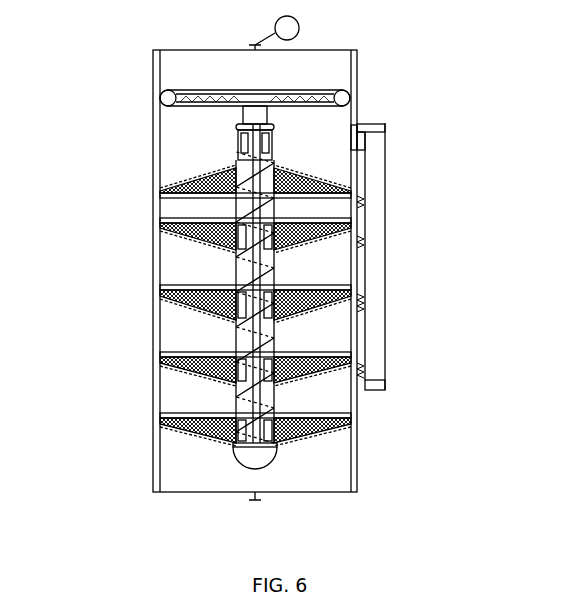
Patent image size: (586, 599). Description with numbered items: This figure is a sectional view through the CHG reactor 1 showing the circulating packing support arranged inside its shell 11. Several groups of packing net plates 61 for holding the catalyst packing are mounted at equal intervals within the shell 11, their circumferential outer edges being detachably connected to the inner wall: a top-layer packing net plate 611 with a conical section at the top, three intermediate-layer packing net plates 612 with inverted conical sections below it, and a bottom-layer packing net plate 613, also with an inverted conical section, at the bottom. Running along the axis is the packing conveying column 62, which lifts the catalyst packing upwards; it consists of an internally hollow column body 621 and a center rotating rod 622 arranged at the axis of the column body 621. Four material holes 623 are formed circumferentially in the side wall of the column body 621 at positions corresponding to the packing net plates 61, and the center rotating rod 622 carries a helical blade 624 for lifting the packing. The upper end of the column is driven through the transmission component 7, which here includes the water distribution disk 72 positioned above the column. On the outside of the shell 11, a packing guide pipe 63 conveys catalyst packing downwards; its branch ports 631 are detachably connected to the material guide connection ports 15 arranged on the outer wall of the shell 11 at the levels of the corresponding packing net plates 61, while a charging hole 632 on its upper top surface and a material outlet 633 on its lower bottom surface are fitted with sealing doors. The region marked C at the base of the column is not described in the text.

The CHG reactor 1 is at (155, 178).
The shell 11 is at (160, 263).
The transmission component 7 is at (290, 71).
The water distribution disk 72 is at (318, 92).
The material guide connection port 15 is at (359, 130).
The packing guide pipe 63 is at (419, 255).
The branch port 631 is at (366, 142).
The charging hole 632 is at (382, 122).
The material outlet 633 is at (378, 392).
The packing net plate 61 is at (260, 319).
The top-layer packing net plate 611 is at (352, 203).
The intermediate-layer packing net plate 612 is at (338, 305).
The bottom-layer packing net plate 613 is at (328, 435).
The packing conveying column 62 is at (260, 320).
The column body 621 is at (238, 160).
The center rotating rod 622 is at (268, 277).
The material hole 623 is at (240, 242).
The helical blade 624 is at (232, 446).
The clearance C is at (269, 469).